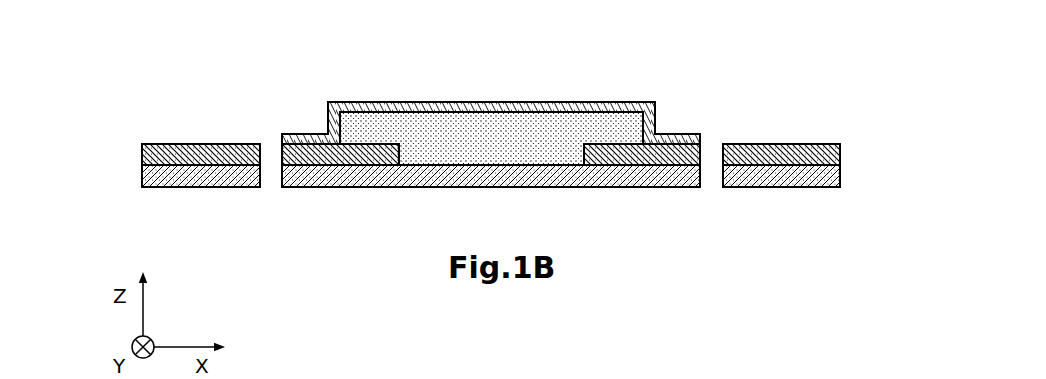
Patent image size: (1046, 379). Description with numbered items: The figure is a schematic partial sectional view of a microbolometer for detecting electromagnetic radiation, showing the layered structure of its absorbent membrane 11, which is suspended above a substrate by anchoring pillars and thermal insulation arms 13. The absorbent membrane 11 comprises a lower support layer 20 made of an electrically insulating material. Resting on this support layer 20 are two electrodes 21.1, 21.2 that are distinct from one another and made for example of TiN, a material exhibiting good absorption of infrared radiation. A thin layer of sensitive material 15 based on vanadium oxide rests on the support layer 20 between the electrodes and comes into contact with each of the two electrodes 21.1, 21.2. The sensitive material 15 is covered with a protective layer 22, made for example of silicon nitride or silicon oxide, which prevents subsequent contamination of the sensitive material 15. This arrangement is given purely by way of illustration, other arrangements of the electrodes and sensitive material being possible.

The absorbent membrane 11 is at (326, 81).
The thermal insulation arms 13 is at (173, 82).
The sensitive material 15 is at (475, 140).
The lower support layer 20 is at (840, 177).
The first electrode 21.1 is at (142, 155).
The second electrode 21.2 is at (840, 155).
The protective layer 22 is at (557, 102).